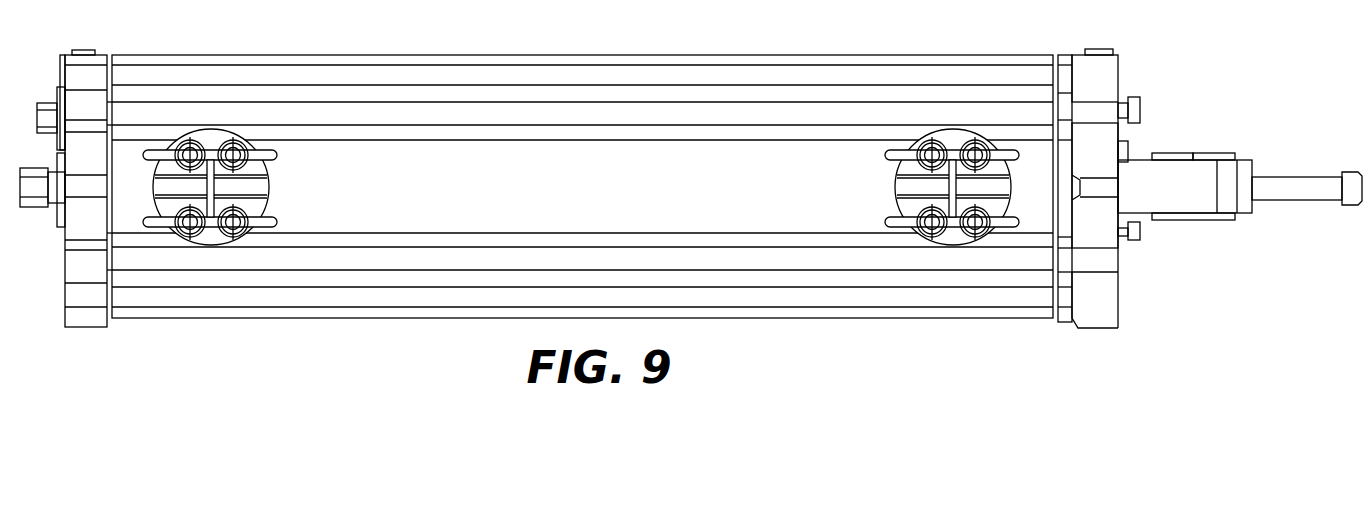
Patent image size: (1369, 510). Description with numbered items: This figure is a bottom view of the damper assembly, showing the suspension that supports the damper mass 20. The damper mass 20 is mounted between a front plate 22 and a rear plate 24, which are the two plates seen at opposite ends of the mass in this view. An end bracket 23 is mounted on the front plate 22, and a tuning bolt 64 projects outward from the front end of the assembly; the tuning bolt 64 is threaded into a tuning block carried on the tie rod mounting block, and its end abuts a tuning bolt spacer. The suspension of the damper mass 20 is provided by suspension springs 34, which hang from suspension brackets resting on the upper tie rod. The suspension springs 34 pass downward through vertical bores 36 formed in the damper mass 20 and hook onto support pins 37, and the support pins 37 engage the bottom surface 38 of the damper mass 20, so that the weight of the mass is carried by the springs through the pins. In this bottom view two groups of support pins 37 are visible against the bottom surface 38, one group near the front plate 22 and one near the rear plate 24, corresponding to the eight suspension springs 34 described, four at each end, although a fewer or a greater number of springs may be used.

The damper mass 20 is at (593, 108).
The front plate 22 is at (1102, 260).
The end bracket 23 is at (1180, 197).
The rear plate 24 is at (103, 270).
The suspension springs 34 is at (234, 140).
The vertical bores 36 is at (203, 243).
The support pins 37 is at (278, 157).
The bottom surface 38 is at (577, 198).
The tuning bolt 64 is at (1306, 183).